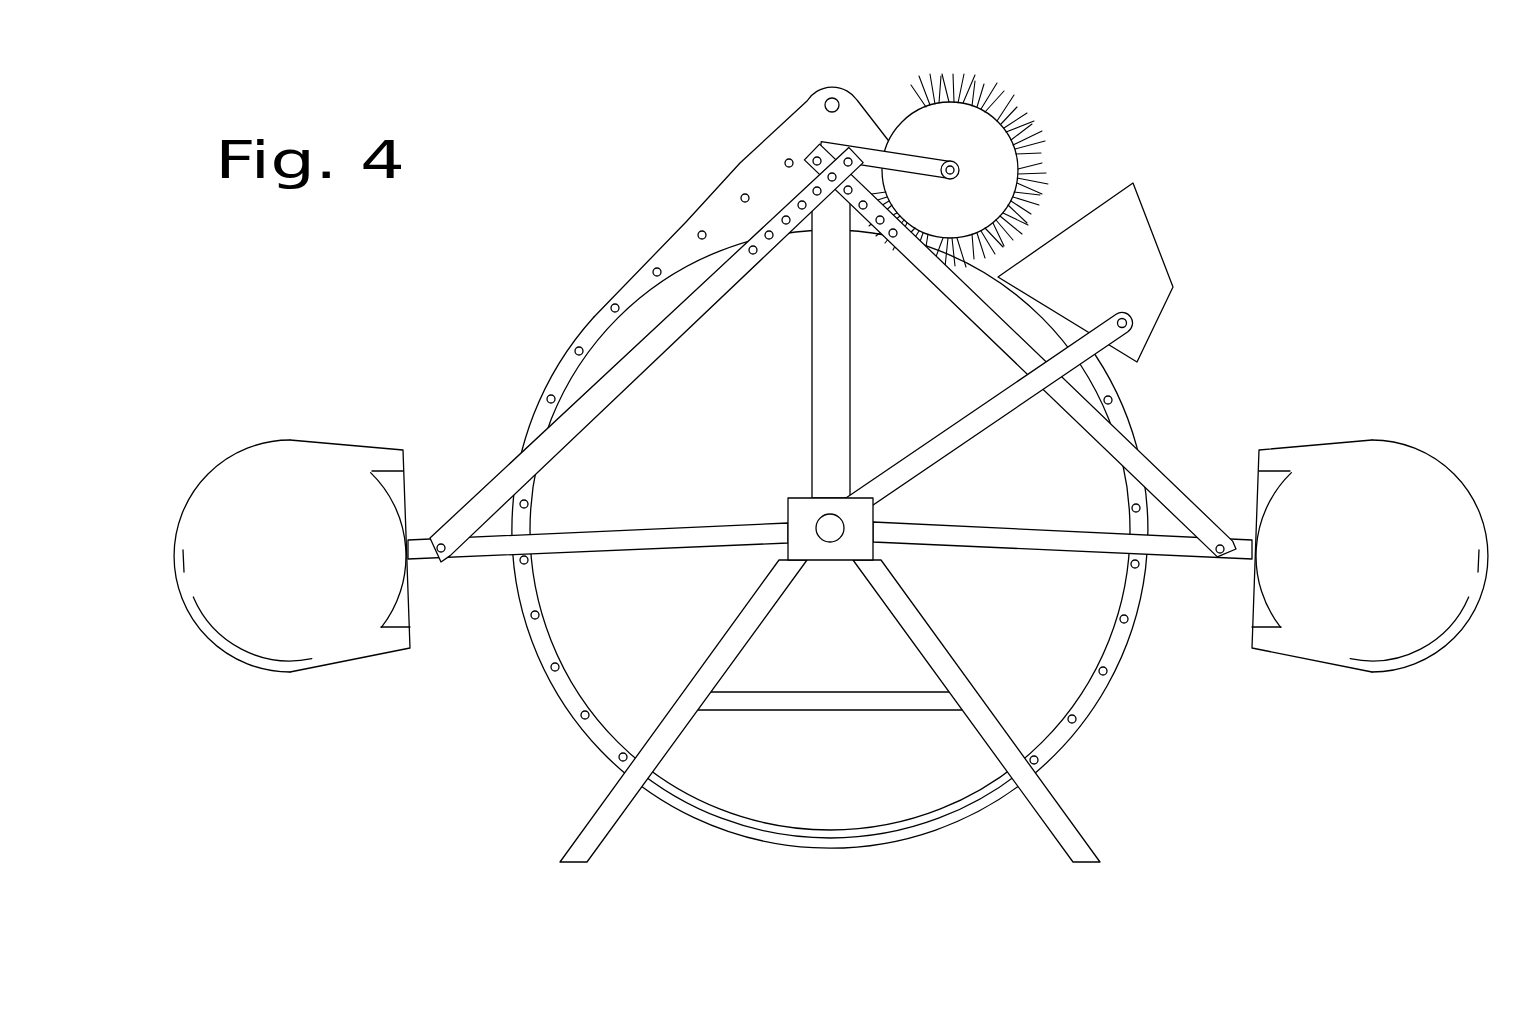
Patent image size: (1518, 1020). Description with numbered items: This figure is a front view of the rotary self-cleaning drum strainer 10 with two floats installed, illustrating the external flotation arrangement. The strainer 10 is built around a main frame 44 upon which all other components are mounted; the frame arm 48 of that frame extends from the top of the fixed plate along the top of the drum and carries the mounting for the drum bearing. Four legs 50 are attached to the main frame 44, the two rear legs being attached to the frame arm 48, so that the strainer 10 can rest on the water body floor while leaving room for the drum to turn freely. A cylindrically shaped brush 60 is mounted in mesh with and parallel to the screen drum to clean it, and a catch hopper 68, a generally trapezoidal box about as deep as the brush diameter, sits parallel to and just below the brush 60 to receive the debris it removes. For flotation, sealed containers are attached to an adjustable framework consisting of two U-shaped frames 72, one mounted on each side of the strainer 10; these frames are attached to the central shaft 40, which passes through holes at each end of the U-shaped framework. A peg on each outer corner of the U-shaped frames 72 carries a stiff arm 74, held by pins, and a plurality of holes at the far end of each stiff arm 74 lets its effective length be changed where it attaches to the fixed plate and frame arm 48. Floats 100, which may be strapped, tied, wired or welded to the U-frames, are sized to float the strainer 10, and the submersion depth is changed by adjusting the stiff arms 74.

The rotary self-cleaning drum strainer 10 is at (1150, 410).
The central shaft 40 is at (828, 548).
The main frame 44 is at (752, 177).
The frame arm 48 is at (812, 383).
The legs 50 is at (1063, 810).
The brush 60 is at (985, 135).
The catch hopper 68 is at (1140, 250).
The U-shaped frames 72 is at (628, 551).
The stiff arm 74 is at (590, 390).
The floats 100 is at (285, 440).